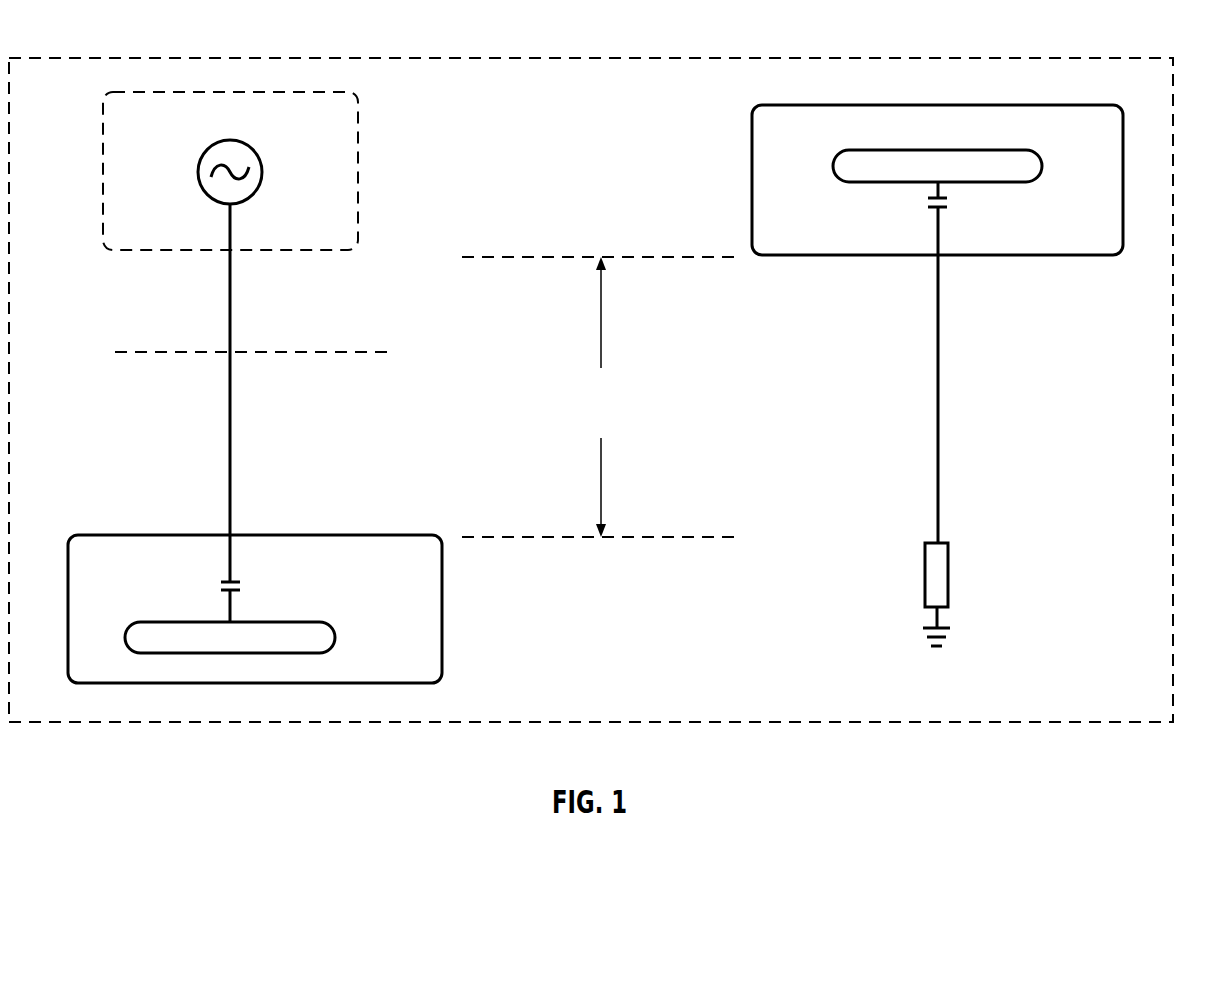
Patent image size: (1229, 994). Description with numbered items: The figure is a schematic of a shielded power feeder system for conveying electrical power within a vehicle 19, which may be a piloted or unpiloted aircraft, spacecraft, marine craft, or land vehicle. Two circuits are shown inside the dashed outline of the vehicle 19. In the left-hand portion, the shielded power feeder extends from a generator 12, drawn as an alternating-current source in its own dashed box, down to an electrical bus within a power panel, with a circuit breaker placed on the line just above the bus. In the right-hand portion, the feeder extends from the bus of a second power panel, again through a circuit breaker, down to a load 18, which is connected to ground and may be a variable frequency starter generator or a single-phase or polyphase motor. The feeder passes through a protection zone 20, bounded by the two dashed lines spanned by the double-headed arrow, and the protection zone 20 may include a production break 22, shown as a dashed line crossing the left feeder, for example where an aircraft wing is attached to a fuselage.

The generator 12 is at (333, 92).
The load 18 is at (941, 541).
The vehicle 19 is at (1163, 59).
The protection zone 20 is at (687, 257).
The production break 22 is at (373, 352).